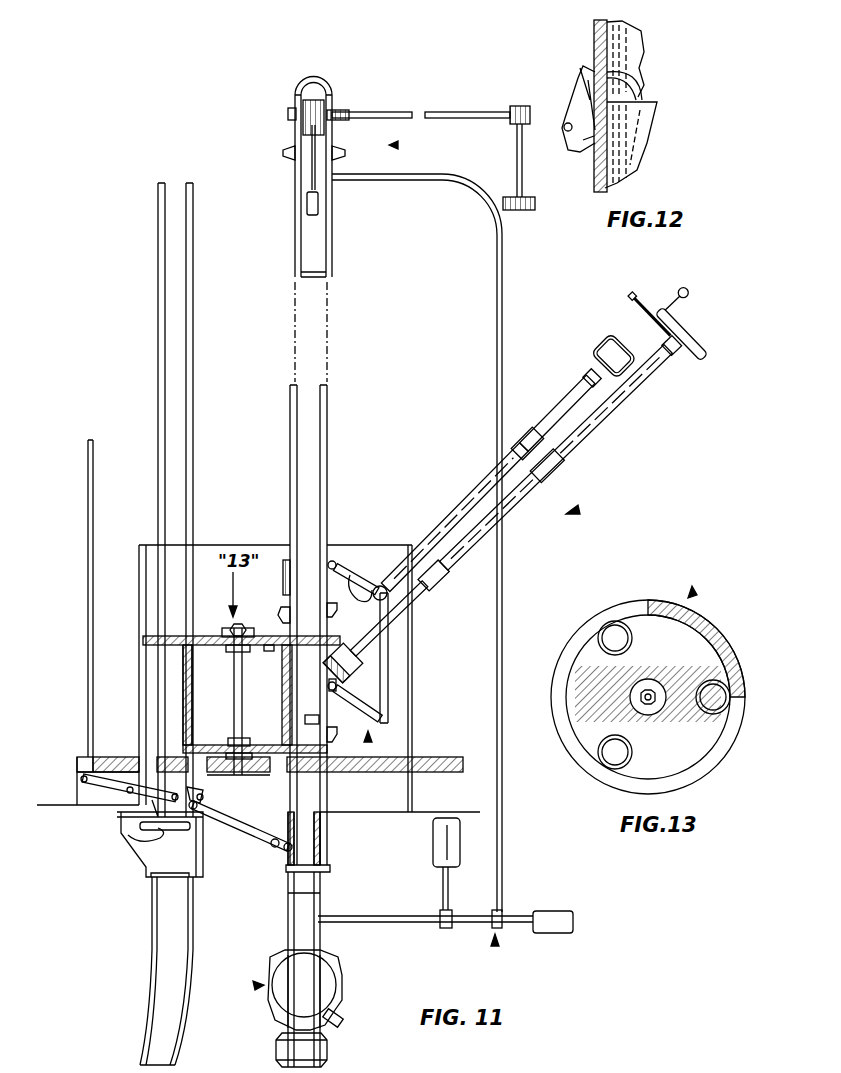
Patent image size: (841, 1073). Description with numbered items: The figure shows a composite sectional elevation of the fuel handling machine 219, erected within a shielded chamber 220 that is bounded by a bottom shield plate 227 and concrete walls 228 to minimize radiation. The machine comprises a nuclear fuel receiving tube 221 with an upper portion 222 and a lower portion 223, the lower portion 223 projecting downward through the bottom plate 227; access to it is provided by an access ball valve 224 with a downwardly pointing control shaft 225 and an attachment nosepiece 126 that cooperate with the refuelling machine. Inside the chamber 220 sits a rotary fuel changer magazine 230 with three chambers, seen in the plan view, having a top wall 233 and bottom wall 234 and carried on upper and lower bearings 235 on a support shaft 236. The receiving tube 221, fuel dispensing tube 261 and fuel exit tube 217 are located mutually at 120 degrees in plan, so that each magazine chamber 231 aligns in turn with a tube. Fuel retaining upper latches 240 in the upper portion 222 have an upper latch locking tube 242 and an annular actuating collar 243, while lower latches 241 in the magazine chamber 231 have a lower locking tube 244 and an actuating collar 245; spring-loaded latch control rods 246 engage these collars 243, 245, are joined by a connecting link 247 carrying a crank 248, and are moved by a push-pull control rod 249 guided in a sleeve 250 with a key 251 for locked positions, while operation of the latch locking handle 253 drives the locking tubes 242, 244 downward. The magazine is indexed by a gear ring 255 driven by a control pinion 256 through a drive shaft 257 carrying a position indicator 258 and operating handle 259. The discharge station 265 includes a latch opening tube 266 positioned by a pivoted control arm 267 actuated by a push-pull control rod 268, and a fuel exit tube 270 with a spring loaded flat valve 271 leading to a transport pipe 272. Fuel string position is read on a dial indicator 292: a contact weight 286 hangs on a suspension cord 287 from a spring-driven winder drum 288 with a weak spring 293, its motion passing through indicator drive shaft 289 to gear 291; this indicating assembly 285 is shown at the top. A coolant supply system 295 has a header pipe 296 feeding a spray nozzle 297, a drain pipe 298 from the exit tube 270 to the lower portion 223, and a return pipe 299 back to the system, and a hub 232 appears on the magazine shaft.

In FIG. 11, the 120° spacing 120 is at (256, 986).
In FIG. 11, the attachment nosepiece 126 is at (278, 1040).
In FIG. 11, the fuel discharge or exit tube 217 is at (172, 816).
In FIG. 11, the fuel handling machine 219 is at (572, 511).
In FIG. 11, the shielded chamber 220 is at (368, 740).
In FIG. 11, the nuclear fuel receiving tube 221 is at (327, 390).
In FIG. 12, the nuclear fuel receiving tube 221 is at (643, 43).
In FIG. 11, the upper portion 222 is at (333, 230).
In FIG. 11, the lower portion 223 is at (321, 854).
In FIG. 11, the access ball valve 224 is at (336, 960).
In FIG. 11, the control shaft 225 is at (338, 1010).
In FIG. 11, the bottom shield plate 227 is at (462, 766).
In FIG. 11, the concrete walls 228 is at (480, 808).
In FIG. 11, the fuel changer magazine 230 is at (265, 760).
In FIG. 13, the fuel changer magazine 230 is at (690, 595).
In FIG. 11, the magazine chamber 231 is at (315, 720).
In FIG. 13, the magazine chamber 231 is at (606, 759).
In FIG. 11, the upper hub 232 is at (185, 645).
In FIG. 11, the top wall 233 is at (269, 650).
In FIG. 13, the top wall 233 is at (632, 627).
In FIG. 11, the bottom wall 234 is at (230, 745).
In FIG. 11, the upper and lower bearings 235 is at (229, 650).
In FIG. 11, the support shaft 236 is at (234, 688).
In FIG. 11, the fuel retaining upper latches 240 is at (281, 612).
In FIG. 12, the fuel retaining upper latches 240 is at (641, 83).
In FIG. 11, the lower fuel retaining latches 241 is at (331, 734).
In FIG. 11, the upper latch locking tube 242 is at (283, 583).
In FIG. 12, the upper latch locking tube 242 is at (593, 56).
In FIG. 11, the annular actuating collar 243 is at (340, 561).
In FIG. 11, the lower locking tube 244 is at (282, 706).
In FIG. 11, the locking tube actuating collar 245 is at (340, 686).
In FIG. 11, the spring-loaded latch control rods 246 is at (350, 582).
In FIG. 11, the connecting link 247 is at (365, 657).
In FIG. 11, the crank 248 is at (373, 601).
In FIG. 11, the push-pull control rod 249 is at (442, 574).
In FIG. 11, the sleeve 250 is at (500, 462).
In FIG. 11, the key 251 is at (550, 402).
In FIG. 11, the latch locking handle 253 is at (610, 333).
In FIG. 11, the gear ring 255 is at (150, 636).
In FIG. 11, the control pinion 256 is at (340, 684).
In FIG. 11, the drive shaft 257 is at (420, 597).
In FIG. 11, the position indicator 258 is at (637, 292).
In FIG. 11, the operating handle 259 is at (694, 342).
In FIG. 11, the fuel dispensing tube 261 is at (194, 229).
In FIG. 11, the fuel discharge station 265 is at (241, 818).
In FIG. 11, the latch opening tube 266 is at (188, 792).
In FIG. 12, the latch opening tube 266 is at (641, 153).
In FIG. 11, the pivoted control arm 267 is at (103, 785).
In FIG. 11, the push-pull control rod 268 is at (98, 423).
In FIG. 11, the fuel exit tube 270 is at (190, 825).
In FIG. 11, the spring loaded flat valve 271 is at (140, 841).
In FIG. 11, the transport pipe 272 is at (155, 951).
In FIG. 11, the upper assembly 285 is at (396, 145).
In FIG. 11, the indicator contact weight 286 is at (305, 210).
In FIG. 11, the suspension cord 287 is at (312, 180).
In FIG. 11, the winder drum 288 is at (325, 94).
In FIG. 11, the indicator drive shaft 289 is at (384, 111).
In FIG. 11, the gear 291 is at (512, 123).
In FIG. 11, the dial indicator 292 is at (516, 197).
In FIG. 11, the relatively weak spring 293 is at (323, 130).
In FIG. 11, the coolant supply system 295 is at (494, 942).
In FIG. 11, the header pipe 296 is at (503, 607).
In FIG. 11, the spray nozzle 297 is at (334, 178).
In FIG. 11, the drain pipe 298 is at (273, 848).
In FIG. 11, the return pipe 299 is at (368, 915).